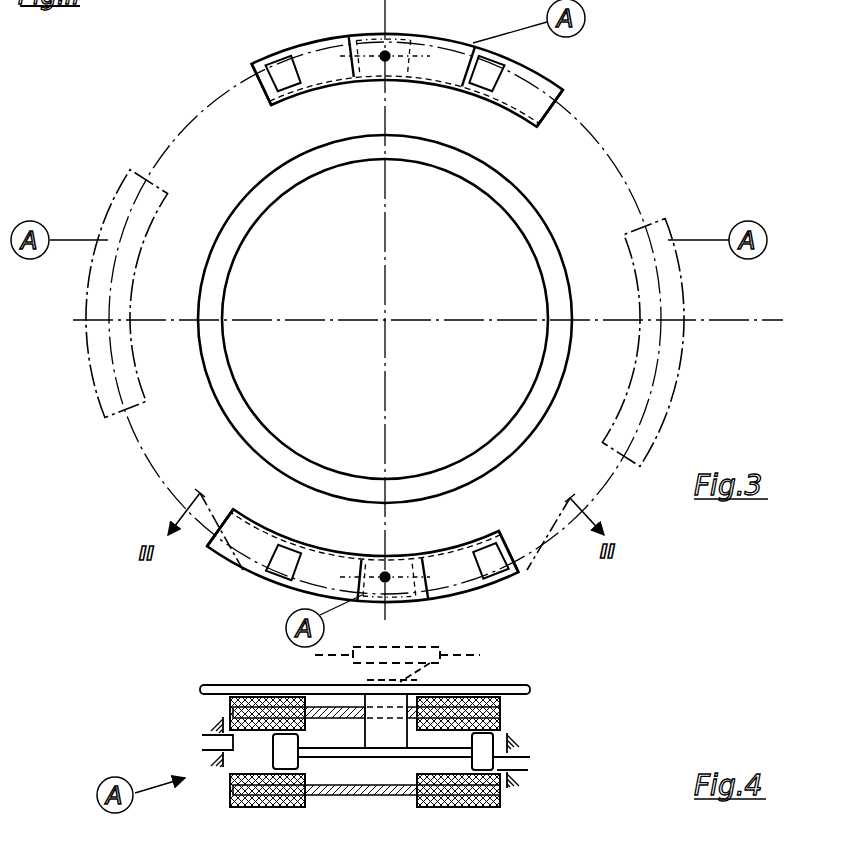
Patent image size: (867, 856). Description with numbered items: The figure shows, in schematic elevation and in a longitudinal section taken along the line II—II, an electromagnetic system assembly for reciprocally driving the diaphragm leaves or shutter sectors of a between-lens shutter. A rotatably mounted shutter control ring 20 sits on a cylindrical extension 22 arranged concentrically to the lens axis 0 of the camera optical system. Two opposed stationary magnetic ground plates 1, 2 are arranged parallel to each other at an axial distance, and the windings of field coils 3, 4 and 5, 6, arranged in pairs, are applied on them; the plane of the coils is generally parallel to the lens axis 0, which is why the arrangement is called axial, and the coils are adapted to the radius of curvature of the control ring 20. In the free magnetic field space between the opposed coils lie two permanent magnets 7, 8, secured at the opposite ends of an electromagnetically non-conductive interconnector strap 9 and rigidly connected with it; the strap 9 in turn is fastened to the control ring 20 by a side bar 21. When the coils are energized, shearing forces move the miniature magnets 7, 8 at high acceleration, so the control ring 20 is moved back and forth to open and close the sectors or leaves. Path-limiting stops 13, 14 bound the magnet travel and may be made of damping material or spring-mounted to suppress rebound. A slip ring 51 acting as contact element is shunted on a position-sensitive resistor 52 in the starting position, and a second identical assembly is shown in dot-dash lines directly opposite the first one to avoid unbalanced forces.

In FIG. 3, the lens axis 0 is at (389, 317).
In FIG. 4, the magnetic ground plate 1 is at (500, 712).
In FIG. 4, the magnetic ground plate 2 is at (500, 792).
In FIG. 3, the field coil 3 is at (258, 63).
In FIG. 4, the field coil 3 is at (253, 700).
In FIG. 3, the field coil 4 is at (182, 42).
In FIG. 4, the field coil 4 is at (233, 798).
In FIG. 3, the field coil 5 is at (533, 87).
In FIG. 4, the field coil 5 is at (500, 725).
In FIG. 3, the field coil 6 is at (730, 40).
In FIG. 4, the field coil 6 is at (500, 802).
In FIG. 3, the permanent magnet 7 is at (283, 54).
In FIG. 4, the permanent magnet 7 is at (273, 752).
In FIG. 3, the permanent magnet 8 is at (500, 62).
In FIG. 4, the permanent magnet 8 is at (493, 738).
In FIG. 4, the interconnector strap 9 is at (341, 757).
In FIG. 4, the path-limiting stop 13 is at (513, 763).
In FIG. 4, the path-limiting stop 14 is at (217, 744).
In FIG. 3, the shutter control ring 20 is at (203, 135).
In FIG. 4, the shutter control ring 20 is at (528, 688).
In FIG. 3, the side bar 21 is at (400, 43).
In FIG. 4, the side bar 21 is at (393, 745).
In FIG. 3, the cylindrical extension 22 is at (263, 197).
In FIG. 4, the slip ring 51 is at (440, 670).
In FIG. 4, the position-sensitive resistor 52 is at (440, 655).